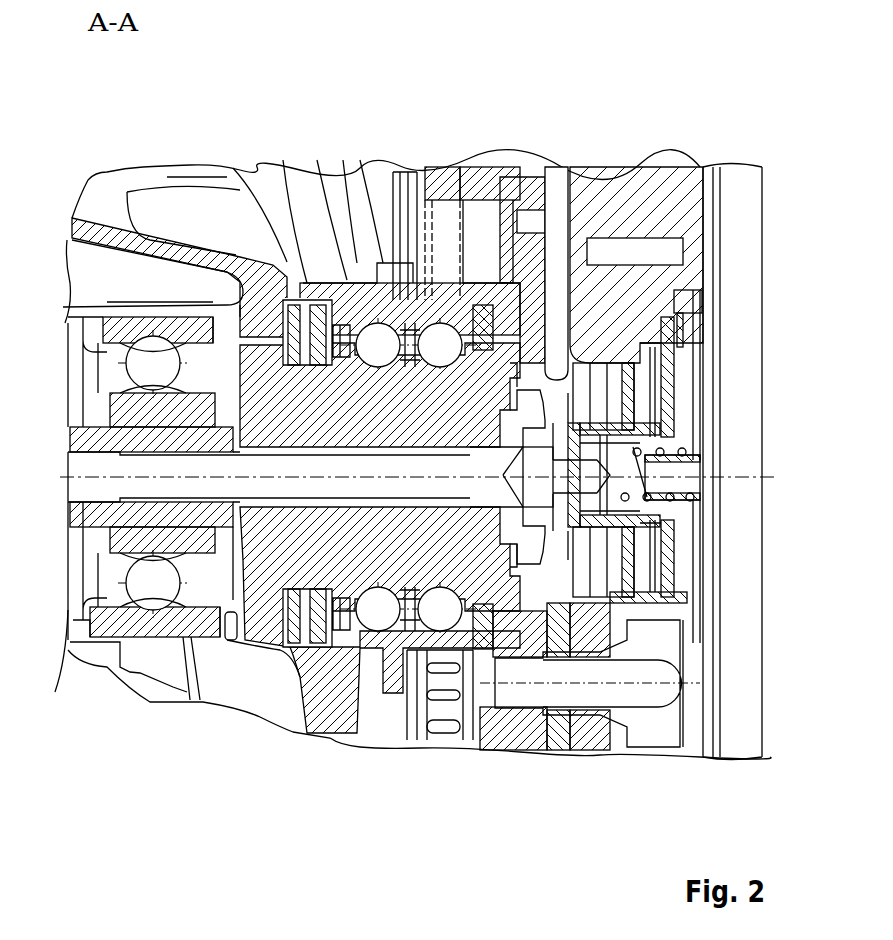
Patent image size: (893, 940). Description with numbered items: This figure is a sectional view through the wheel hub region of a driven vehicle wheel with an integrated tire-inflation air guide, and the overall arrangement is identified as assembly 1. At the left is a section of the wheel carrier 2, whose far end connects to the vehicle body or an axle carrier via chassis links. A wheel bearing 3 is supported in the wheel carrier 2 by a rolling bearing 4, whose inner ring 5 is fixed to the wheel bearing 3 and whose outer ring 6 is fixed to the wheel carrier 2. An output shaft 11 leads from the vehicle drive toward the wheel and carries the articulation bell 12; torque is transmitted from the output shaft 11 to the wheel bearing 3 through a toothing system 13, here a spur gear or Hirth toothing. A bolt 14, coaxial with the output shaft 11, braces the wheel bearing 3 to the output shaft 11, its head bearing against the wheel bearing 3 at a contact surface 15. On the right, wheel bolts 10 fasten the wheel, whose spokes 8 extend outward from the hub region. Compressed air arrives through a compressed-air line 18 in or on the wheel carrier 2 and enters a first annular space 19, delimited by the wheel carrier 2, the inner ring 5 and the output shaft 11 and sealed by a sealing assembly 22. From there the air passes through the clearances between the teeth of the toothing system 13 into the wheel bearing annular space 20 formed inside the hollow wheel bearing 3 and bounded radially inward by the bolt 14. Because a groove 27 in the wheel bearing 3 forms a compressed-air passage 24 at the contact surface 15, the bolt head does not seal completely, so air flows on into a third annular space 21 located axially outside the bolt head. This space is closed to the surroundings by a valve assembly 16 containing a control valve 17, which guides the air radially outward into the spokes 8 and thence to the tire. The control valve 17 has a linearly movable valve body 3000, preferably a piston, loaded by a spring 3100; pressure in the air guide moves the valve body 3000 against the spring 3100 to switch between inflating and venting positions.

The pump assembly 1 is at (214, 122).
The wheel carrier 2 is at (125, 235).
The wheel bearing 3 is at (515, 280).
The rolling bearing 4 is at (389, 300).
The inner ring 5 is at (385, 266).
The outer ring 6 is at (416, 290).
The spokes 8 is at (643, 197).
The wheel bolts 10 is at (612, 693).
The output shaft 11 is at (62, 660).
The articulation bell 12 is at (107, 380).
The toothing system 13 is at (262, 565).
The bolt 14 is at (373, 487).
The contact surface 15 is at (552, 570).
The valve assembly 16 is at (677, 377).
The control valve 17 is at (670, 397).
The compressed-air line 18 is at (292, 305).
The first annular space 19 is at (314, 300).
The wheel bearing annular space 20 is at (404, 650).
The third annular space 21 is at (467, 513).
The sealing assembly 22 is at (107, 302).
The compressed-air passage 24 is at (557, 363).
The groove 27 is at (523, 385).
The valve body 3000 is at (703, 442).
The spring 3100 is at (695, 468).